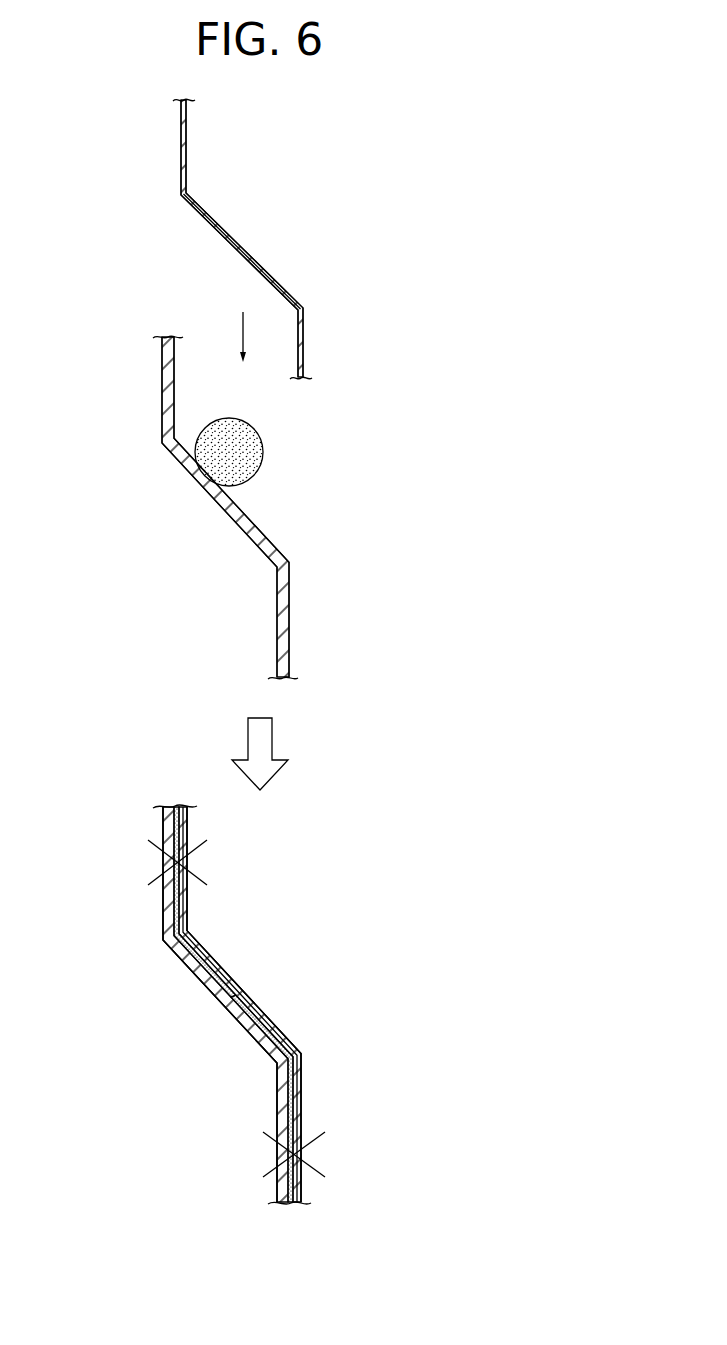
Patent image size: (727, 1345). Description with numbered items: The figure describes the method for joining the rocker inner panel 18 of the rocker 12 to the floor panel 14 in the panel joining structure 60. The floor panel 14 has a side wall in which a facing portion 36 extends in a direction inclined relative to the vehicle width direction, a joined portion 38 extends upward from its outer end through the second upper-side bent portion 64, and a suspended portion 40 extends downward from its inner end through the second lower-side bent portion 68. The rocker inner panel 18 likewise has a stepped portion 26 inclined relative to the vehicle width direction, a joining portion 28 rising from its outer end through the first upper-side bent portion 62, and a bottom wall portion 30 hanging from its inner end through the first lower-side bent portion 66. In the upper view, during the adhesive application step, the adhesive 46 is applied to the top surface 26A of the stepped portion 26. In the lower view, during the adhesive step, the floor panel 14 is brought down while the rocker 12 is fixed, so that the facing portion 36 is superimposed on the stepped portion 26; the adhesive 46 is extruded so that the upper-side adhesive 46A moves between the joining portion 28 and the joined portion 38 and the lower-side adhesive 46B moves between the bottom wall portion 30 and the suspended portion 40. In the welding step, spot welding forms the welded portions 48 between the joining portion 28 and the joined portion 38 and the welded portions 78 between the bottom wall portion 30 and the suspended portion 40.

The floor panel 14 is at (196, 117).
The rocker 12 is at (185, 770).
The rocker inner panel 18 is at (158, 359).
The panel joining structure 60 is at (358, 160).
The joined portion 38 is at (188, 160).
The second upper-side bent portion 64 is at (189, 195).
The facing portion 36 is at (258, 266).
The second lower-side bent portion 68 is at (302, 309).
The suspended portion 40 is at (303, 348).
The joining portion 28 is at (162, 411).
The first upper-side bent portion 62 is at (163, 452).
The stepped portion 26 is at (255, 761).
The top surface 26A is at (246, 516).
The first lower-side bent portion 66 is at (277, 569).
The bottom wall portion 30 is at (277, 622).
The adhesive 46 is at (169, 810).
The upper-side adhesive 46A is at (163, 923).
The lower-side adhesive 46B is at (279, 1087).
The welded portions 48 is at (161, 870).
The welded portions 78 is at (277, 1167).